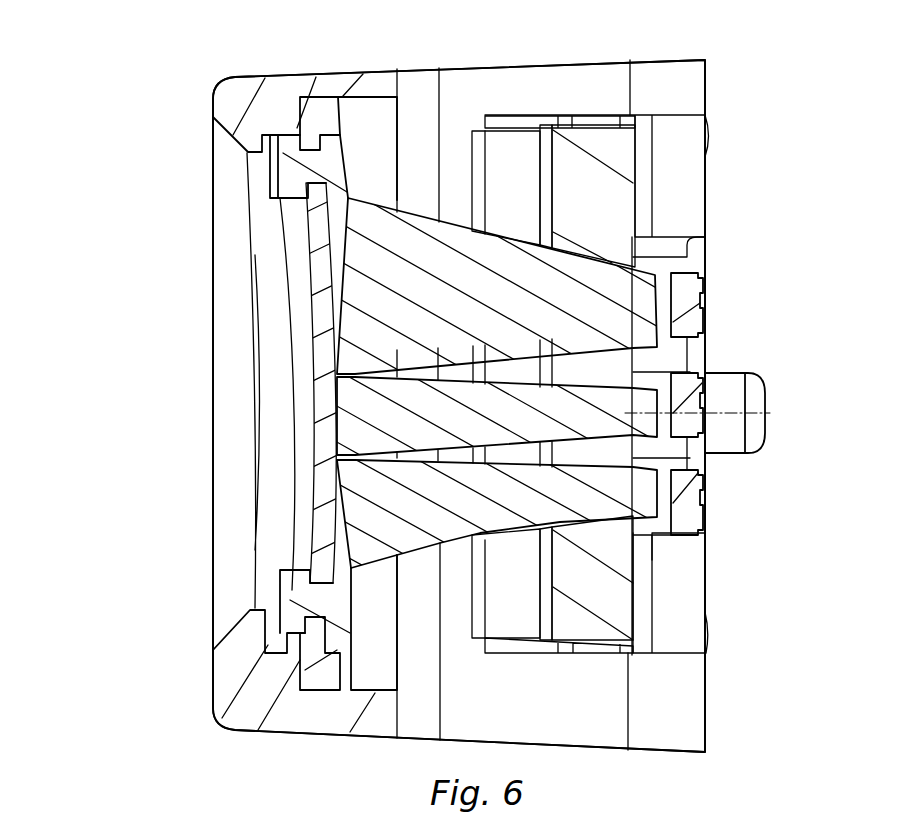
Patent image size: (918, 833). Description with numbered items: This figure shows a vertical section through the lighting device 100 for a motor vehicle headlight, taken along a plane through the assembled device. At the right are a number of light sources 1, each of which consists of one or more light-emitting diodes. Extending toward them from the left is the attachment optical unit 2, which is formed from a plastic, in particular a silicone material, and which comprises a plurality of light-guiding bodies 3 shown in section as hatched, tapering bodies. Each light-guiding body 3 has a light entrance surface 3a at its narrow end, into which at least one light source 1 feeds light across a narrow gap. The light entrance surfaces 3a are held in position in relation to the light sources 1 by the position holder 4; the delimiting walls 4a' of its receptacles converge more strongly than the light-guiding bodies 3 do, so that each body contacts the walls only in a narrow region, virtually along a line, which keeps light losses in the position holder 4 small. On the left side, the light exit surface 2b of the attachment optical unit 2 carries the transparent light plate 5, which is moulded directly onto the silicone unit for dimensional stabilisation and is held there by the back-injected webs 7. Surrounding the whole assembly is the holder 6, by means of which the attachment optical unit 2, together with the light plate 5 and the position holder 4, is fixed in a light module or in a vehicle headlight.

The lighting device 100 is at (126, 68).
The holder 6 is at (247, 712).
The webs 7 is at (297, 168).
The light exit surface 2b is at (333, 315).
The light plate 5 is at (315, 404).
The light-guiding body 3 is at (403, 243).
The light entrance surface 3a is at (655, 307).
The position holder 4 is at (605, 240).
The delimiting walls 4a' is at (595, 401).
The attachment optical unit 2 is at (474, 517).
The light source 1 is at (720, 292).